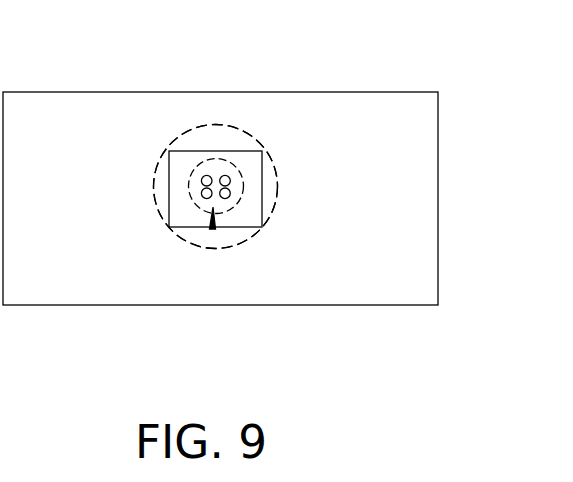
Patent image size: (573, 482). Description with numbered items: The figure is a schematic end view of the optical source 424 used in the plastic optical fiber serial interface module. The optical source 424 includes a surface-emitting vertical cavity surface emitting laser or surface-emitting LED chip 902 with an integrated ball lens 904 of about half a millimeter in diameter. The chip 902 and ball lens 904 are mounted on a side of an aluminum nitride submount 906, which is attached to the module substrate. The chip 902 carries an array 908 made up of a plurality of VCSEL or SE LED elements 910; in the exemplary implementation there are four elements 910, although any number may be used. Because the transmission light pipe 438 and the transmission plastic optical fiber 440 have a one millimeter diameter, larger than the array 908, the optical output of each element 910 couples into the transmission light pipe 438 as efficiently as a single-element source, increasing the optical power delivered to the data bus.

The optical source 424 is at (453, 47).
The transmission light pipe 438 is at (197, 125).
The transmission plastic optical fiber 440 is at (228, 125).
The SE VCSEL or SE LED chip 902 is at (262, 160).
The ball lens 904 is at (237, 165).
The AlN submount 906 is at (403, 243).
The array 908 is at (212, 229).
The VCSEL or SE LED elements 910 is at (205, 182).